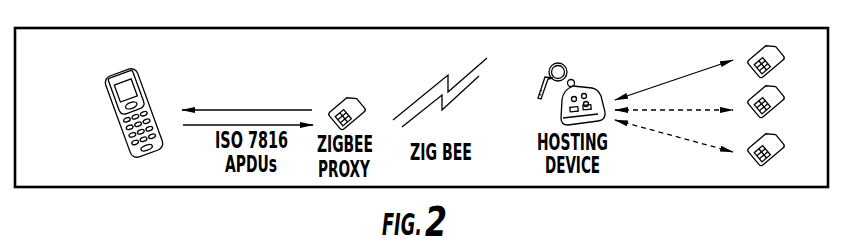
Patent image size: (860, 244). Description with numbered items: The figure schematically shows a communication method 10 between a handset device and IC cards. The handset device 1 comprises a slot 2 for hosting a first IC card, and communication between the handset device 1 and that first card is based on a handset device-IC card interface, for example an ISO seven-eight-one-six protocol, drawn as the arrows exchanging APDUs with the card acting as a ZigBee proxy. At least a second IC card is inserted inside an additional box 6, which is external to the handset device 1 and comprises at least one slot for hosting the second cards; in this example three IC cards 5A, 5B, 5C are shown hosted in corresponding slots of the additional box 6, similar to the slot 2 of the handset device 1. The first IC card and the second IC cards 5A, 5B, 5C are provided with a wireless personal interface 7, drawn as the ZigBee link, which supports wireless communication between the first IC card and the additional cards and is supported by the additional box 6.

The communication method 10 is at (87, 50).
The handset device 1 is at (128, 72).
The slot 2 is at (148, 83).
The wireless personal interface 7 is at (440, 86).
The additional box 6 is at (592, 87).
The second IC card 5A is at (786, 50).
The second IC card 5B is at (786, 89).
The second IC card 5C is at (786, 136).